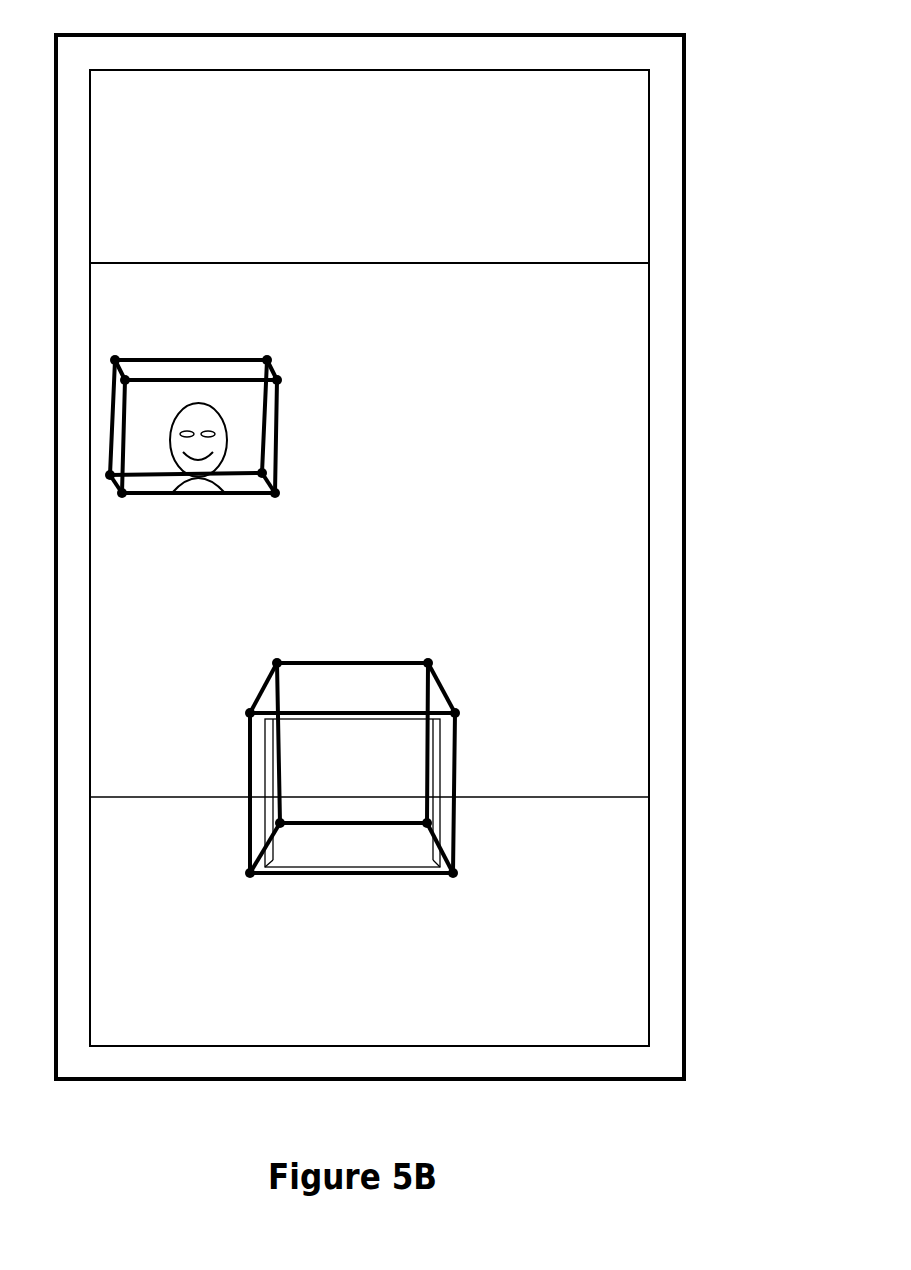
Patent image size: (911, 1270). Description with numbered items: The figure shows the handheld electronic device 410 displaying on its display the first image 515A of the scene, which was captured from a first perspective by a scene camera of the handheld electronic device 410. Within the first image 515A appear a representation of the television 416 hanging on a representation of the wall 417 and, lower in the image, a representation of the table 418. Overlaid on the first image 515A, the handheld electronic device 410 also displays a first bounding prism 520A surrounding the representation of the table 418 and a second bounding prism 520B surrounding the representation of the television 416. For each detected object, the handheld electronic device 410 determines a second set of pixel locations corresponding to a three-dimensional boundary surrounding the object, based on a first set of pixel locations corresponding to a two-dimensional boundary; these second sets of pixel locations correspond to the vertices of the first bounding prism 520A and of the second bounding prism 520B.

The handheld electronic device 410 is at (427, 34).
The first image 515A is at (617, 503).
The representation of the wall 417 is at (517, 475).
The representation of the television 416 is at (262, 411).
The second bounding prism 520B is at (278, 427).
The representation of the table 418 is at (378, 725).
The first bounding prism 520A is at (353, 662).